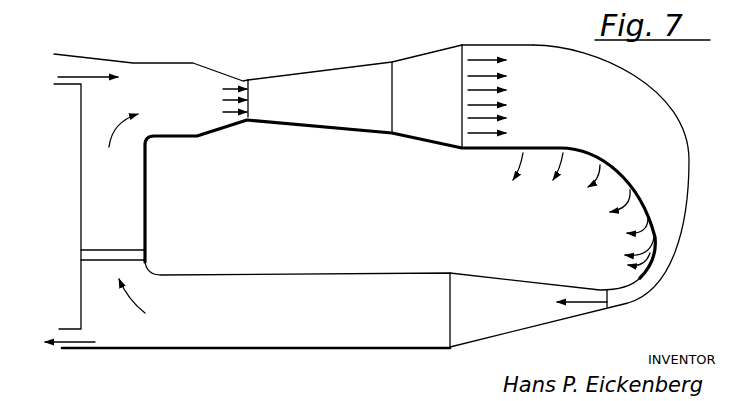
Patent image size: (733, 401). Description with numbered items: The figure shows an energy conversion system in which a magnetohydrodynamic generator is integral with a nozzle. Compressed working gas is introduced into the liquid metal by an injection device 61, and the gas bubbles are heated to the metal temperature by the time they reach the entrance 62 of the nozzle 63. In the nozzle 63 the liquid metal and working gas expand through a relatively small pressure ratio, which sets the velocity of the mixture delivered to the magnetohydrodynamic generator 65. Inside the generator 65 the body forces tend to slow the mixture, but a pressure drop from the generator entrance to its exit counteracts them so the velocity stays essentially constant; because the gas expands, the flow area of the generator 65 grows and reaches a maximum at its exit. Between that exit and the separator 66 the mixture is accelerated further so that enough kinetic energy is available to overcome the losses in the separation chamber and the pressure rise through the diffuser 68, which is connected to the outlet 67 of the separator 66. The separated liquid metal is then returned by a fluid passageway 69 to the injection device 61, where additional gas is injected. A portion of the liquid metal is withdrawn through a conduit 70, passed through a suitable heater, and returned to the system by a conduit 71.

The injection device 61 is at (140, 254).
The nozzle entrance 62 is at (150, 77).
The nozzle 63 is at (242, 80).
The magnetohydrodynamic generator 65 is at (360, 52).
The separator 66 is at (640, 97).
The separator outlet 67 is at (615, 297).
The diffuser 68 is at (527, 318).
The fluid passageway 69 is at (298, 337).
The conduit 70 is at (68, 352).
The conduit 71 is at (77, 58).